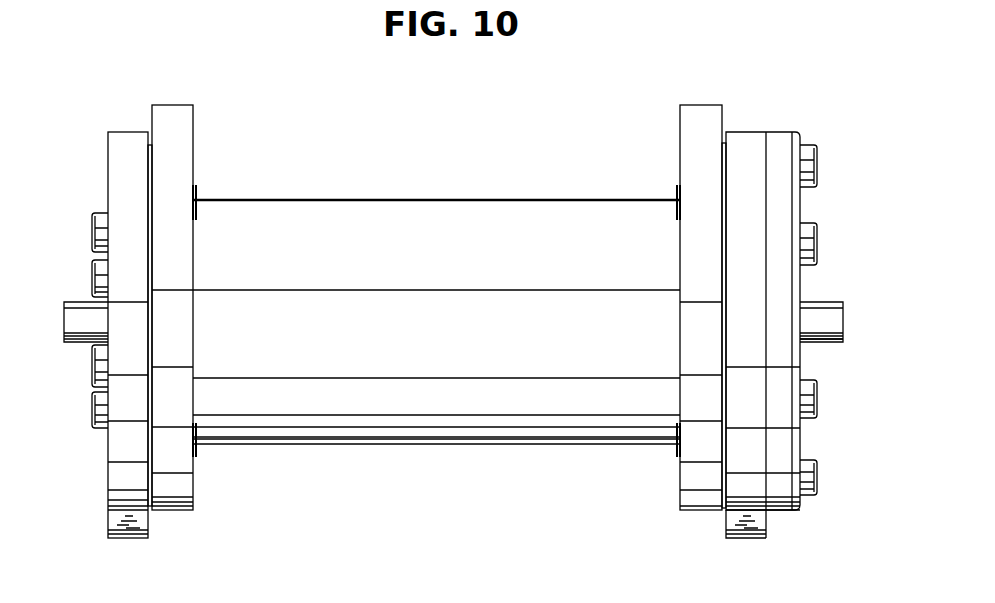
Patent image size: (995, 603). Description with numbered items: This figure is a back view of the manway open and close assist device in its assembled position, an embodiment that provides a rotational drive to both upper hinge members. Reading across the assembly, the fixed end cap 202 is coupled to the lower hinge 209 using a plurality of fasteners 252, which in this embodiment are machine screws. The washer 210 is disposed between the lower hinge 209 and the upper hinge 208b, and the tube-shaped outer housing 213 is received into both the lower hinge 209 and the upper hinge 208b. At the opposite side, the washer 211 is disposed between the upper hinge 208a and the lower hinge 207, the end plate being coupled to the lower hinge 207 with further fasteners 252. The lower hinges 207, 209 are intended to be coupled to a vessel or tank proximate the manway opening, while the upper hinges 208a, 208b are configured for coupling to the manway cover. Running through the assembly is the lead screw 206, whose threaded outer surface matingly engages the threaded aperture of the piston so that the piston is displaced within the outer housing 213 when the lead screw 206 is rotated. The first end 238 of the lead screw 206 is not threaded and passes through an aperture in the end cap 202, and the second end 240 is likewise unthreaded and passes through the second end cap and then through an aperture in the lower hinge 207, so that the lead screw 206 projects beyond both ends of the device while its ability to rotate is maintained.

The fixed end cap 202 is at (776, 497).
The lead screw 206 is at (832, 315).
The lower hinge 207 is at (118, 131).
The upper hinge 208a is at (200, 82).
The upper hinge 208b is at (685, 105).
The lower hinge 209 is at (745, 132).
The second washer 210 is at (726, 131).
The first washer 211 is at (150, 131).
The outer housing/outer helix 213 is at (393, 198).
The first end of lead screw 238 is at (826, 340).
The second end of lead screw 240 is at (72, 340).
The fasteners 252 is at (95, 235).